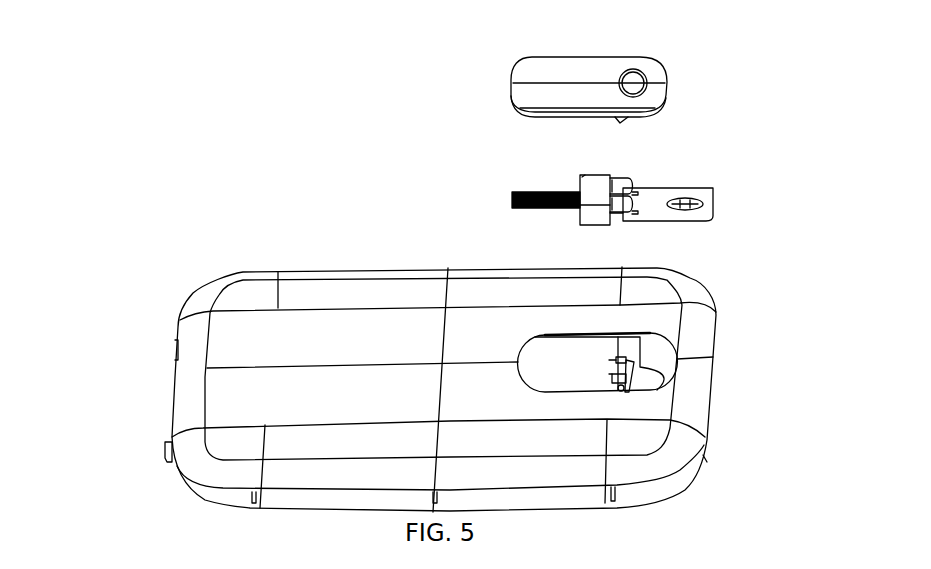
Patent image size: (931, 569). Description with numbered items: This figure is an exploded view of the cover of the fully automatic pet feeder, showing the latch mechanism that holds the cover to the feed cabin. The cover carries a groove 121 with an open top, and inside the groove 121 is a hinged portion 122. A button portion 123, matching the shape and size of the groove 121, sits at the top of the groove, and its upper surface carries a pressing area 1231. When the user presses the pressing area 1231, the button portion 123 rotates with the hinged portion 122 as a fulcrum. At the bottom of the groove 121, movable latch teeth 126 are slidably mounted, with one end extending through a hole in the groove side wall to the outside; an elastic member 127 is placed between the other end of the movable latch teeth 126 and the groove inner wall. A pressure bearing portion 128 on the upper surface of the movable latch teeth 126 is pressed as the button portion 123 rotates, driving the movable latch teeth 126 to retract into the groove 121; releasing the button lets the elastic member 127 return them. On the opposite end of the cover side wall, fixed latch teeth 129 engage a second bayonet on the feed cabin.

The groove 121 is at (560, 362).
The hinged portion 122 is at (640, 367).
The button portion 123 is at (591, 67).
The pressing area 1231 is at (636, 80).
The movable latch teeth 126 is at (713, 190).
The elastic member 127 is at (537, 192).
The pressure bearing portion 128 is at (622, 178).
The fixed latch teeth 129 is at (167, 440).